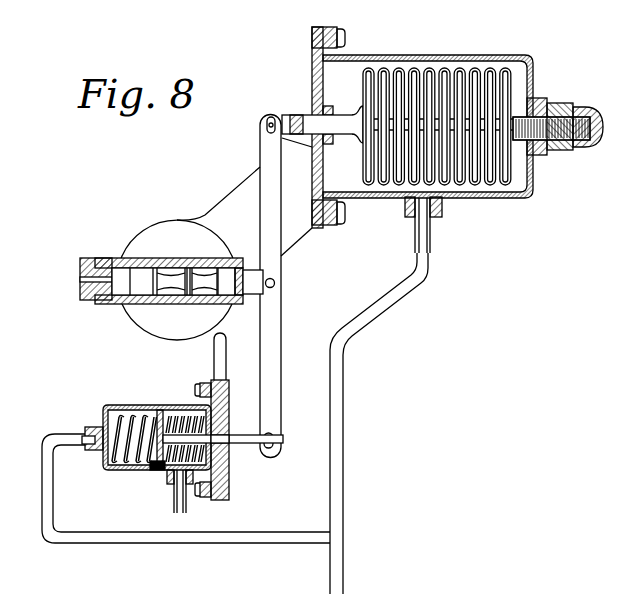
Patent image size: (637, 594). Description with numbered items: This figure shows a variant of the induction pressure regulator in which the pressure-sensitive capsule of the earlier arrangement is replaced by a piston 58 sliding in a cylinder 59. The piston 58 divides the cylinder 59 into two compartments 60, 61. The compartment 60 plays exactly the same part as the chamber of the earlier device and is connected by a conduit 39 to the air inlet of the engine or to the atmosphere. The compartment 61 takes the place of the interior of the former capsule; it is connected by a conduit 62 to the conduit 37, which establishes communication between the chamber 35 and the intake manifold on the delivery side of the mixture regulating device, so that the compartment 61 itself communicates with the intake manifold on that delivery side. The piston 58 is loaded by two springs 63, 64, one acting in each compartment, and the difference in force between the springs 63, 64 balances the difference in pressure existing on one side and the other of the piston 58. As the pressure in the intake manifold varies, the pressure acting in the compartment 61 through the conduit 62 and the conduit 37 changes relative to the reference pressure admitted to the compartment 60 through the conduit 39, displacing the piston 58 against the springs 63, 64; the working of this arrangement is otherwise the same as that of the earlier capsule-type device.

The chamber 35 is at (382, 190).
The conduit 37 is at (334, 392).
The conduit 39 is at (177, 512).
The piston 58 is at (155, 470).
The cylinder 59 is at (158, 417).
The compartment 60 is at (182, 415).
The compartment 61 is at (122, 412).
The conduit 62 is at (190, 540).
The spring 63 is at (230, 473).
The spring 64 is at (130, 457).